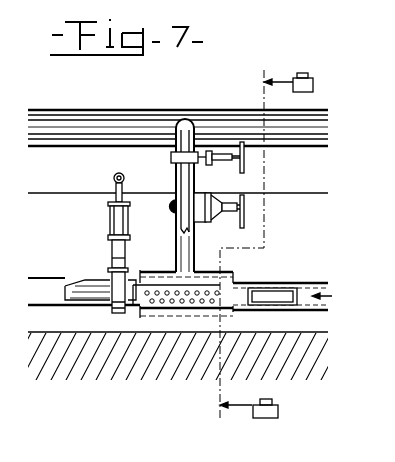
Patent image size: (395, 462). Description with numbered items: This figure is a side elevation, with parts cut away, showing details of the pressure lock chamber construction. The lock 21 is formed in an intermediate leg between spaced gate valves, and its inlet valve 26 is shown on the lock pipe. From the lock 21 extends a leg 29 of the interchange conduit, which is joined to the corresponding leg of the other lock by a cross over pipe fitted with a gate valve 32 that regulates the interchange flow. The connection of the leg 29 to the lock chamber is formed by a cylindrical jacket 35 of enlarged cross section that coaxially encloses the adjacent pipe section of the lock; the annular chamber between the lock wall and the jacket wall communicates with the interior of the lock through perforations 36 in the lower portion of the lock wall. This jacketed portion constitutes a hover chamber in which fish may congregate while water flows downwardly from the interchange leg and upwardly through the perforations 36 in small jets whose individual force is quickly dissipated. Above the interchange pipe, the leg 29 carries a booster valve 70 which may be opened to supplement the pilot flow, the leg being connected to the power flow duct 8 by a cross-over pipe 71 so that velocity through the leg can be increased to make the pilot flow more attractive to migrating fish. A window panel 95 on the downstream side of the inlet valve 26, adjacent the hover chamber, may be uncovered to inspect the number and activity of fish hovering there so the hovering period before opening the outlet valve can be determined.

The power flow duct 8 is at (112, 118).
The cross-over pipe 71 is at (187, 124).
The booster valve 70 is at (200, 162).
The gate valve 32 is at (224, 196).
The leg 29 is at (195, 244).
The cylindrical jacket 35 is at (160, 272).
The perforations 36 is at (222, 300).
The window panel 95 is at (282, 289).
The inlet valve 26 is at (111, 262).
The lock 21 is at (90, 290).